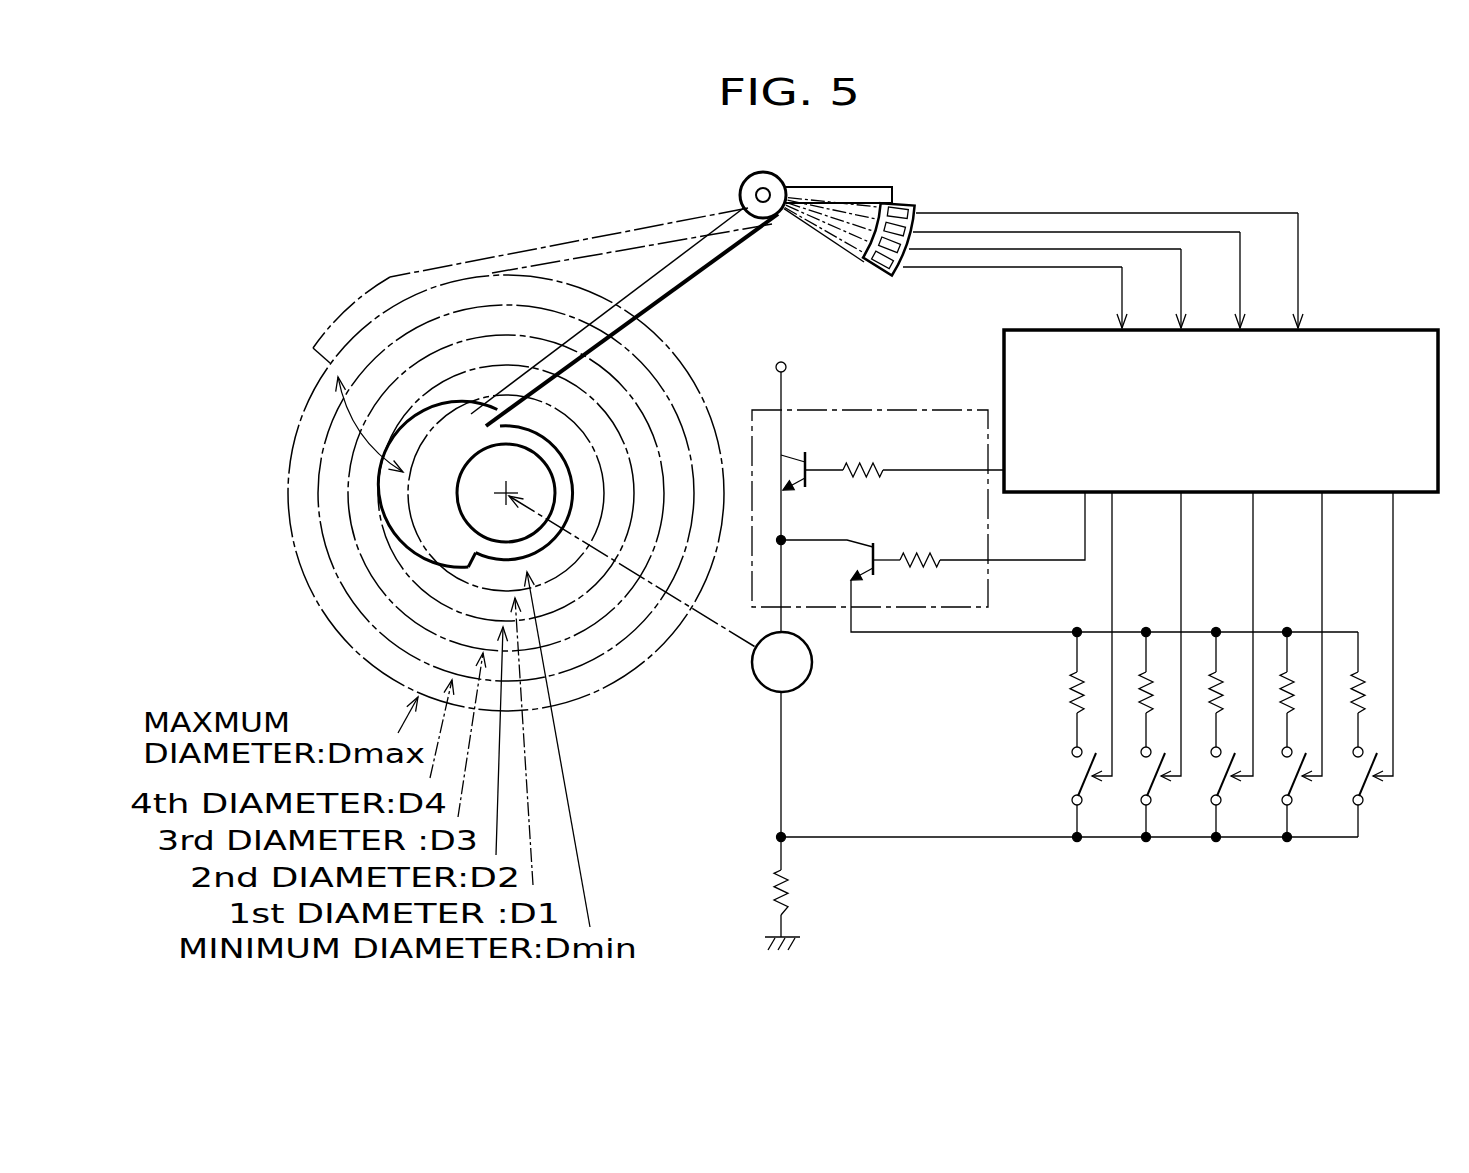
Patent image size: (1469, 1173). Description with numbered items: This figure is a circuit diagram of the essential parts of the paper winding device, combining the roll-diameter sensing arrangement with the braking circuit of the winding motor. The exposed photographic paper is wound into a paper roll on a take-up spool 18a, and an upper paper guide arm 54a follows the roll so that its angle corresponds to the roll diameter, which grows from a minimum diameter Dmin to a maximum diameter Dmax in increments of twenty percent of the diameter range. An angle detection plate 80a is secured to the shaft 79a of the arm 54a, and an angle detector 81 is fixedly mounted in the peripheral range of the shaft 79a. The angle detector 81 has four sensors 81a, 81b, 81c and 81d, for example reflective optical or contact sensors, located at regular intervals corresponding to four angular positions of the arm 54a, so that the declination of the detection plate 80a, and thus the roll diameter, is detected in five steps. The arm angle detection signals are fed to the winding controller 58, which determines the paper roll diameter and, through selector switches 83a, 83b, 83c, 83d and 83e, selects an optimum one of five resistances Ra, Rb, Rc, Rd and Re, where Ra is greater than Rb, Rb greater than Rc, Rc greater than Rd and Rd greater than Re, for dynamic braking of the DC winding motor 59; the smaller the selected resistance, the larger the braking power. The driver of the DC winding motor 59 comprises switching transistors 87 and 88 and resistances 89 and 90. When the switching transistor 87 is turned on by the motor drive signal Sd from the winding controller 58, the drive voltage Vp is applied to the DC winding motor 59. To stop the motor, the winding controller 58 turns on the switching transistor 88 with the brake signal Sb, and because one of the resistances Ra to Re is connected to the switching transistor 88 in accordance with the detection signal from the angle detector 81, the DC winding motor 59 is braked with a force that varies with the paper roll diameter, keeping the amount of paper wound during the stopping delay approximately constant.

The take-up spool 18a is at (543, 548).
The upper paper guide arm 54a is at (698, 263).
The shaft 79a is at (765, 172).
The angle detection plate 80a is at (870, 187).
The angle detector 81 is at (907, 188).
The sensor 81a is at (920, 210).
The sensor 81b is at (922, 232).
The sensor 81c is at (906, 272).
The sensor 81d is at (889, 280).
The winding controller 58 is at (1360, 330).
The DC winding motor 59 is at (935, 410).
The switching transistor 87 is at (808, 460).
The switching transistor 88 is at (875, 545).
The resistance 89 is at (870, 465).
The resistance 90 is at (928, 555).
The resistance Ra is at (1367, 695).
The resistance Rb is at (1282, 693).
The resistance Rc is at (1211, 693).
The resistance Rd is at (1141, 693).
The resistance Re is at (1068, 692).
The selector switch 83a is at (1367, 789).
The selector switch 83b is at (1296, 788).
The selector switch 83c is at (1224, 788).
The selector switch 83d is at (1153, 788).
The selector switch 83e is at (1085, 783).